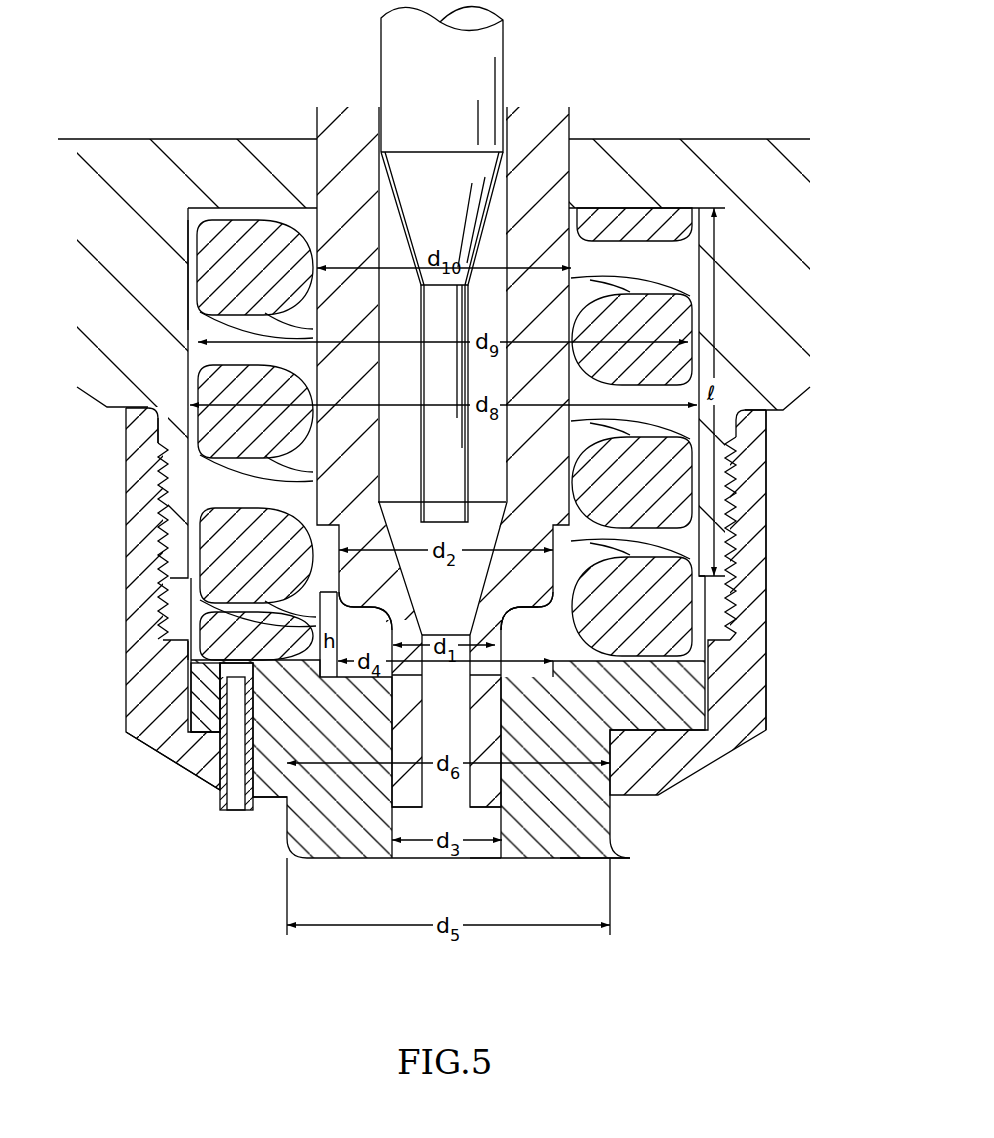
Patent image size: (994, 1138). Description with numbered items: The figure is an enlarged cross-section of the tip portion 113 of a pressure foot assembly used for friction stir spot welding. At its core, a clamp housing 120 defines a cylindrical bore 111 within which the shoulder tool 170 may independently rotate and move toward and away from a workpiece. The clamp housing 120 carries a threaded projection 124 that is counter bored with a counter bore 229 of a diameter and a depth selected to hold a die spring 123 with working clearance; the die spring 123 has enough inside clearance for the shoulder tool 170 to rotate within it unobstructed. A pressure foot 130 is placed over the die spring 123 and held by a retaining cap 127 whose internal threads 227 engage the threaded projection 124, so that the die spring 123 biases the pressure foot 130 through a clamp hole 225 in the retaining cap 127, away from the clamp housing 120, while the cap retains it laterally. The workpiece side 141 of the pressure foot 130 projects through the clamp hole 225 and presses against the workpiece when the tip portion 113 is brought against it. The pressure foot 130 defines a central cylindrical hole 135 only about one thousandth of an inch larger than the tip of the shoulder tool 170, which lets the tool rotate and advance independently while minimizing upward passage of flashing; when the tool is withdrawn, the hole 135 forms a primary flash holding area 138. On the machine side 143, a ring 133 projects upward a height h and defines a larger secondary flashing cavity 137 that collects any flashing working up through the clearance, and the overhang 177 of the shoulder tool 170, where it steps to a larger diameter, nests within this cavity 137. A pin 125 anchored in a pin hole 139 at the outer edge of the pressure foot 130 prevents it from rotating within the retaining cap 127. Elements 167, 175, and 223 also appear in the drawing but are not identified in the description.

The cylindrical bore 111 is at (308, 132).
The tip portion 113 is at (806, 609).
The clamp housing 120 is at (798, 396).
The die spring 123 is at (618, 277).
The threaded projection 124 is at (730, 617).
The pin 125 is at (232, 812).
The retaining cap 127 is at (737, 498).
The pressure foot 130 is at (610, 830).
The ring 133 is at (365, 621).
The central cylindrical hole 135 is at (498, 863).
The secondary flashing cavity 137 is at (551, 651).
The primary flash holding area 138 is at (470, 826).
The pin hole 139 is at (215, 671).
The workpiece side 141 is at (568, 863).
The machine side 143 is at (166, 660).
The needle 167 is at (378, 330).
The shoulder tool 170 is at (570, 125).
The nozzle bore edge 175 is at (423, 818).
The overhang 177 is at (533, 606).
The nut chamfer 223 is at (215, 795).
The clamp hole 225 is at (278, 808).
The threads 227 is at (160, 500).
The counter bore 229 is at (188, 220).